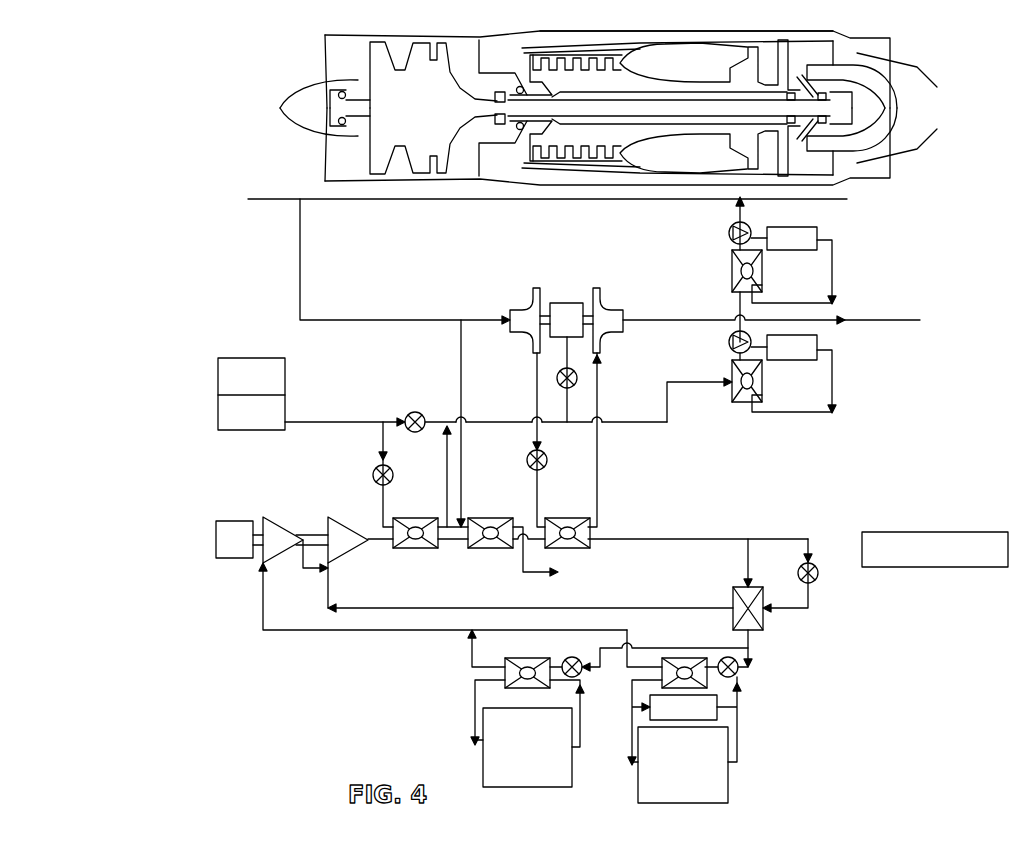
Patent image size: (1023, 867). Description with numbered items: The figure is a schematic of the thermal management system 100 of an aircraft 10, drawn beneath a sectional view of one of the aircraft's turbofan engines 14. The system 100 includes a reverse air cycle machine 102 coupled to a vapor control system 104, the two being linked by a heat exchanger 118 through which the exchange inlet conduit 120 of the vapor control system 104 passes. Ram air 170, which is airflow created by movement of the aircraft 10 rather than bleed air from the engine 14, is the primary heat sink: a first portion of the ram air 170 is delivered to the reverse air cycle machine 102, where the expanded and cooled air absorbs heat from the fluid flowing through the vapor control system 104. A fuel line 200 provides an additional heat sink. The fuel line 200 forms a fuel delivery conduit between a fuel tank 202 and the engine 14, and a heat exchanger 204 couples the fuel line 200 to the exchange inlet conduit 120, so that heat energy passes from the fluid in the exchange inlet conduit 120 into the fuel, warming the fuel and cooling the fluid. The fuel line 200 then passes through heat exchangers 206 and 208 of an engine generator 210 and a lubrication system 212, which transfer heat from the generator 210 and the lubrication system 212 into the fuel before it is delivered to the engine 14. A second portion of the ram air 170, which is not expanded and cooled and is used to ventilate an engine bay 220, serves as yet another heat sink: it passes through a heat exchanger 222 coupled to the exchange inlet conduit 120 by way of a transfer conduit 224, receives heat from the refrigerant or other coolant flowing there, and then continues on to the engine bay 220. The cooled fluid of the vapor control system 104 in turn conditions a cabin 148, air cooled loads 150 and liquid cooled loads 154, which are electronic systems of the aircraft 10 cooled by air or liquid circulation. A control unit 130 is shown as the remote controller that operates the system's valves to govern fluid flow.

The aircraft 10 is at (271, 59).
The turbofan engine 14 is at (592, 31).
The thermal management system 100 is at (186, 318).
The reverse air cycle machine 102 is at (562, 298).
The vapor control system 104 is at (376, 661).
The heat exchanger 118 is at (555, 518).
The exchange inlet conduit 120 is at (458, 540).
The control unit 130 is at (938, 532).
The cabin 148 is at (717, 712).
The air cooled loads 150 is at (728, 782).
The liquid cooled loads 154 is at (572, 762).
The ram air 170 is at (270, 172).
The fuel line 200 is at (322, 421).
The fuel tank 202 is at (218, 412).
The heat exchanger 204 is at (415, 548).
The heat exchanger 206 is at (740, 403).
The heat exchanger 208 is at (732, 272).
The engine generator 210 is at (817, 345).
The lubrication system 212 is at (817, 235).
The engine bay 220 is at (665, 540).
The heat exchanger 222 is at (480, 518).
The transfer conduit 224 is at (461, 355).